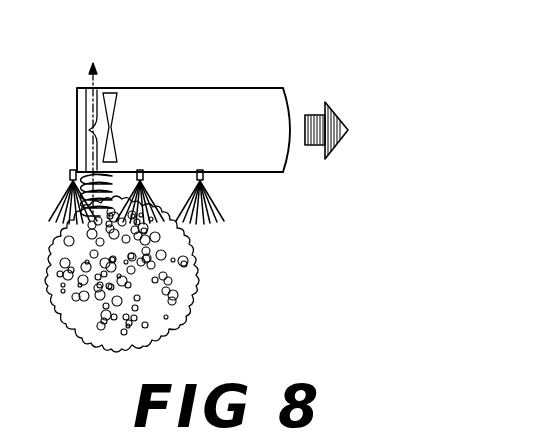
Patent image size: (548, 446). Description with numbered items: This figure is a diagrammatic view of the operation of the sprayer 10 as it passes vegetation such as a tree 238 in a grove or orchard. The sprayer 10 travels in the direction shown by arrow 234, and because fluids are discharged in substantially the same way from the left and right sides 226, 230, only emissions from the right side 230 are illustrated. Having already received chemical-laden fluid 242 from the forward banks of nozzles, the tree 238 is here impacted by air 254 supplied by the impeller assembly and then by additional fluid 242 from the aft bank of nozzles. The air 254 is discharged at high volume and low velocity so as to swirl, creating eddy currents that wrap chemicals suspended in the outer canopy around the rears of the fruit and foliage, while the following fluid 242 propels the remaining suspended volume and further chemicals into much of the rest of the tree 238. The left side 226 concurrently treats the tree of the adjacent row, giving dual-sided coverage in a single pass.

The sprayer 10 is at (219, 45).
The left side 226 is at (244, 88).
The right side 230 is at (263, 172).
The arrow 234 is at (331, 104).
The tree 238 is at (185, 292).
The fluid 242 is at (203, 212).
The air 254 is at (110, 186).